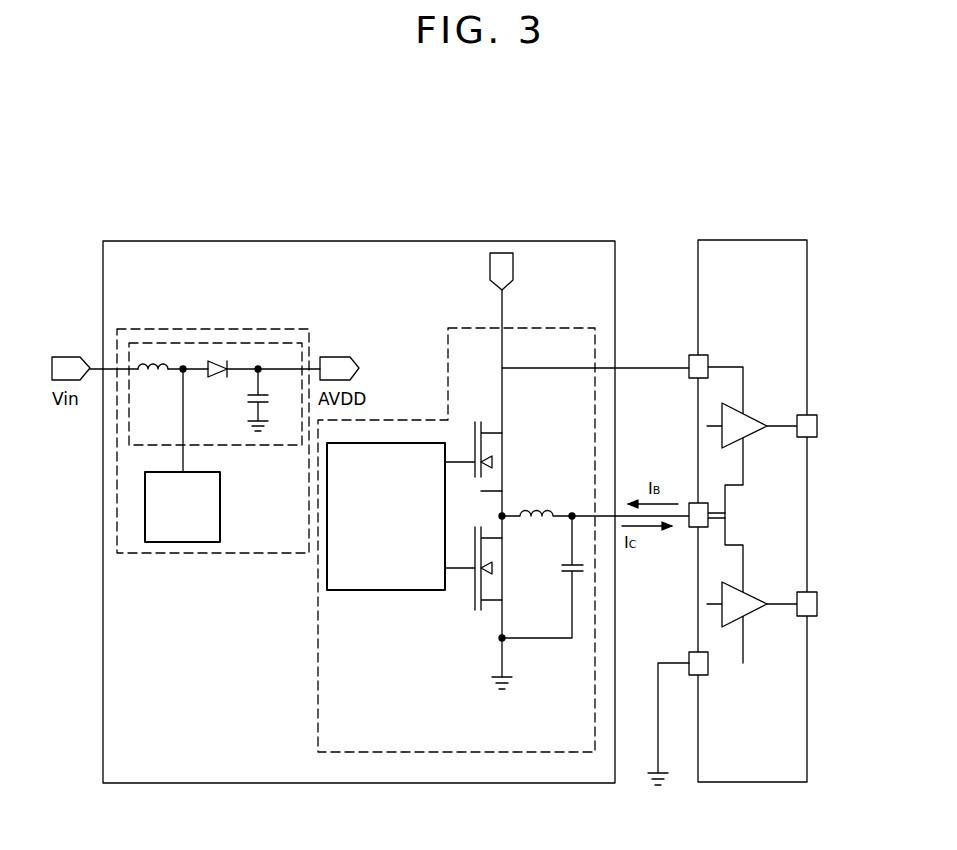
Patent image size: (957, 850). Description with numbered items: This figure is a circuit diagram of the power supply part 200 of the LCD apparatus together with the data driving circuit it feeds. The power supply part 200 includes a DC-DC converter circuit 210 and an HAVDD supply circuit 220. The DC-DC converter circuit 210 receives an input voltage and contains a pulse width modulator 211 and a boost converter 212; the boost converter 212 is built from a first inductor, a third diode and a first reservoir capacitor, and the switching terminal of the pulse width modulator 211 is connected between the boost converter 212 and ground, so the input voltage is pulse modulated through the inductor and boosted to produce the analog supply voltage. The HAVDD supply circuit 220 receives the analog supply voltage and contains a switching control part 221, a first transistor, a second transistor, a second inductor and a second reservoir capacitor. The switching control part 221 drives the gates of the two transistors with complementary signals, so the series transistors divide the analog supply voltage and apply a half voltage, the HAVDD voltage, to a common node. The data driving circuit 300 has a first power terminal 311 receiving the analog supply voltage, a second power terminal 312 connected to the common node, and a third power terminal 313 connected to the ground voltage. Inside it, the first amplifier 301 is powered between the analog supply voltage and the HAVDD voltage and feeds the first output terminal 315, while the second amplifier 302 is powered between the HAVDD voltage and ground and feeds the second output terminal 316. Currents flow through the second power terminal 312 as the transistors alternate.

The power supply part 200 is at (272, 241).
The DC-DC converter circuit 210 is at (140, 553).
The pulse width modulator 211 is at (220, 530).
The boost converter 212 is at (268, 445).
The HAVDD supply circuit 220 is at (548, 328).
The switching control part 221 is at (370, 590).
The data driving circuit 300 is at (745, 240).
The first amplifier 301 is at (742, 412).
The second amplifier 302 is at (742, 590).
The first power terminal 311 is at (700, 355).
The second power terminal 312 is at (692, 527).
The third power terminal 313 is at (706, 675).
The first output terminal 315 is at (810, 437).
The second output terminal 316 is at (810, 616).